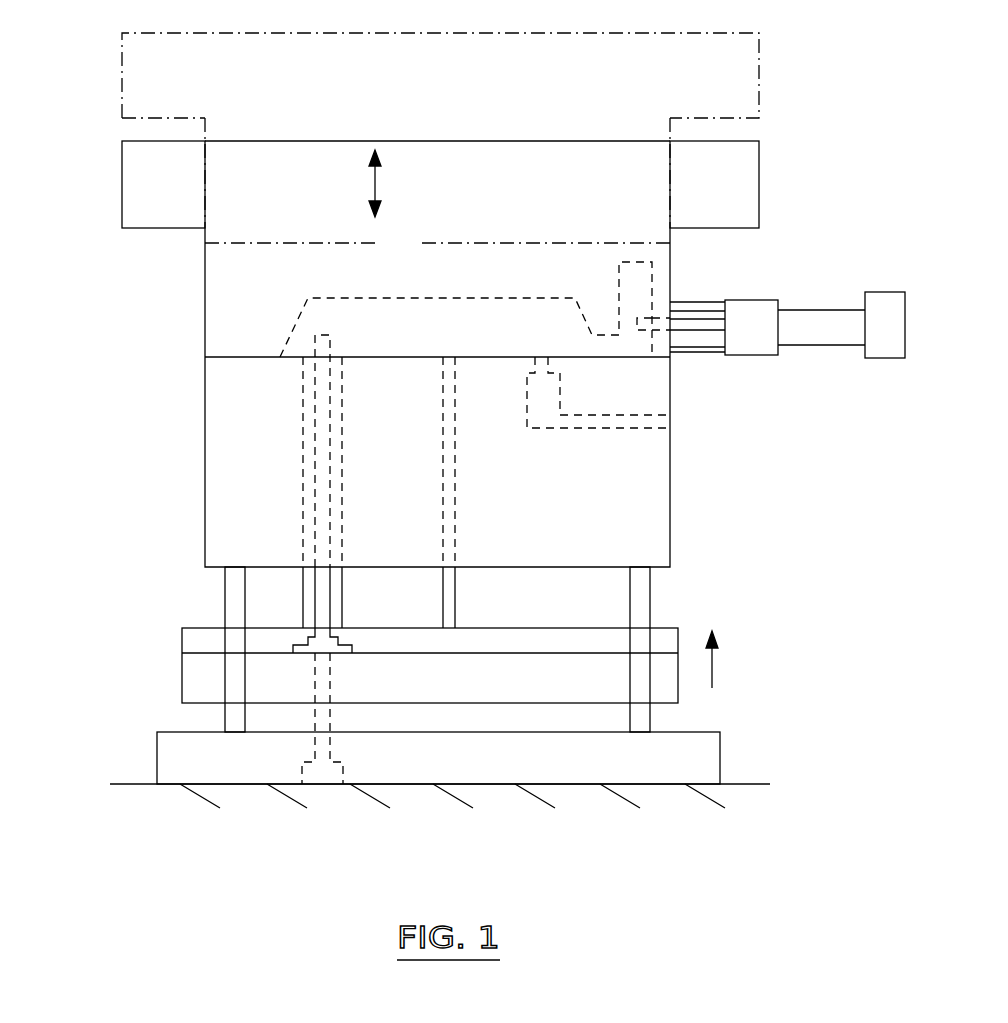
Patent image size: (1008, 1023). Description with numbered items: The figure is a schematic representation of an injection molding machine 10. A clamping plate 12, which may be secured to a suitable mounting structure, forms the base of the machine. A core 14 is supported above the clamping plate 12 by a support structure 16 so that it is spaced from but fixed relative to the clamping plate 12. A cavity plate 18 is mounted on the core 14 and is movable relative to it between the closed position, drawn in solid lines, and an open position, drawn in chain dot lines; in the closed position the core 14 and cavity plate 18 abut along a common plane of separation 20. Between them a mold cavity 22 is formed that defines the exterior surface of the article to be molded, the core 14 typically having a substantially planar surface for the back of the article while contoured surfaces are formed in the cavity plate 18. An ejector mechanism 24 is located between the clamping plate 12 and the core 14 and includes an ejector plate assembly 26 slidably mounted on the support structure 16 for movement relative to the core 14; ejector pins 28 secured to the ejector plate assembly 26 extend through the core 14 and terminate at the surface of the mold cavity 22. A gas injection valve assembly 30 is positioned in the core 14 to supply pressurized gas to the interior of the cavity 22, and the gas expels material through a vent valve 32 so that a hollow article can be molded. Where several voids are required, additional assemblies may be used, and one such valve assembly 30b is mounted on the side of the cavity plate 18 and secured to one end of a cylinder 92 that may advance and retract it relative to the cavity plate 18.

The injection molding machine 10 is at (474, 446).
The clamping plate 12 is at (710, 768).
The core 14 is at (192, 461).
The support structure 16 is at (230, 600).
The cavity plate 18 is at (192, 282).
The plane of separation 20 is at (205, 357).
The mold cavity 22 is at (383, 325).
The ejector mechanism 24 is at (371, 665).
The ejector plate assembly 26 is at (430, 670).
The ejector pins 28 is at (456, 601).
The gas injection valve assembly 30 is at (330, 786).
The gas injection valve assembly 30b is at (791, 329).
The vent valve 32 is at (545, 432).
The cylinder 92 is at (825, 330).